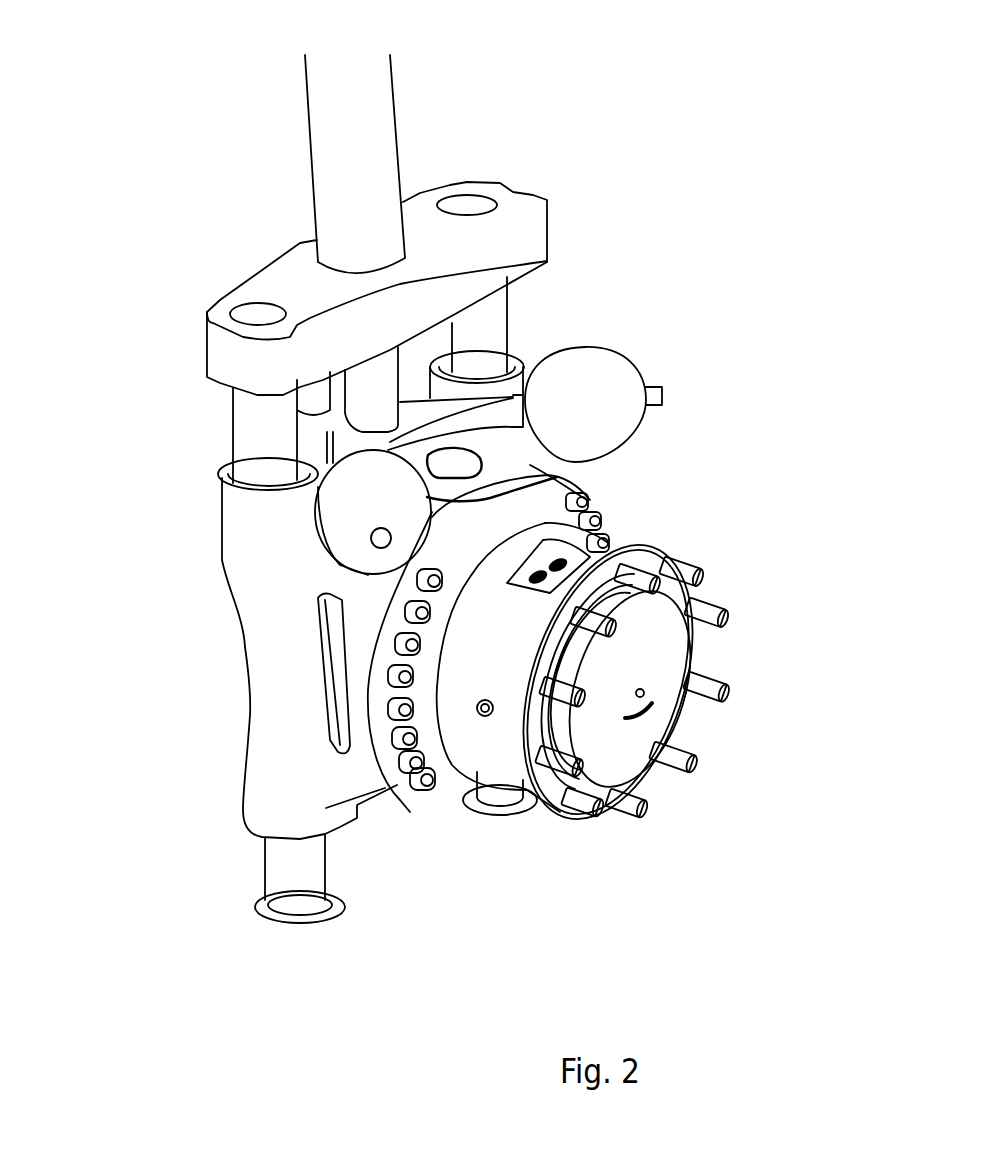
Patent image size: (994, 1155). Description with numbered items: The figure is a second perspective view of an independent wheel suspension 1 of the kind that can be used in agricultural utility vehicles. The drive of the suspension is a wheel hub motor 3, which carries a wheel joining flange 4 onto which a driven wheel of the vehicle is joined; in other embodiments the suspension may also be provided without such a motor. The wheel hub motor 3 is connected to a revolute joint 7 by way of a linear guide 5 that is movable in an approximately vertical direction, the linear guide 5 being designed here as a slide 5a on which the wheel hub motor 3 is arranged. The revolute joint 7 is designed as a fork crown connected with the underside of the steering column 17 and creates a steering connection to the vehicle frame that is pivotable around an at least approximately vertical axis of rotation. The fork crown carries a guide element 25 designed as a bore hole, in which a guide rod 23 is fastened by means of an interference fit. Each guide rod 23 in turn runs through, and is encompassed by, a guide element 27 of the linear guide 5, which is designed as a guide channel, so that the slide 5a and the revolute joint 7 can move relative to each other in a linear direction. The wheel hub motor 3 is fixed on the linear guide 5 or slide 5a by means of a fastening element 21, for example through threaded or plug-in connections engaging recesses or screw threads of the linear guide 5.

The independent wheel suspension 1 is at (435, 522).
The wheel hub motor 3 is at (593, 721).
The wheel joining flange 4 is at (711, 716).
The linear guide 5 is at (294, 723).
The slide 5a is at (326, 723).
The revolute joint 7 is at (461, 257).
The steering column 17 is at (368, 147).
The fastening element 21 is at (400, 768).
The guide rod 23 is at (292, 863).
The guide element 25 is at (257, 313).
The guide element 27 is at (262, 642).